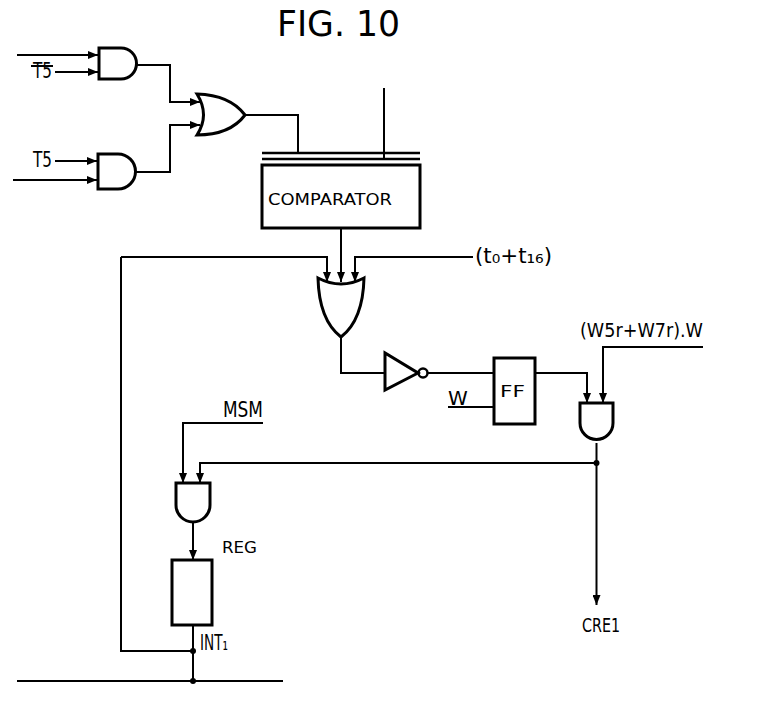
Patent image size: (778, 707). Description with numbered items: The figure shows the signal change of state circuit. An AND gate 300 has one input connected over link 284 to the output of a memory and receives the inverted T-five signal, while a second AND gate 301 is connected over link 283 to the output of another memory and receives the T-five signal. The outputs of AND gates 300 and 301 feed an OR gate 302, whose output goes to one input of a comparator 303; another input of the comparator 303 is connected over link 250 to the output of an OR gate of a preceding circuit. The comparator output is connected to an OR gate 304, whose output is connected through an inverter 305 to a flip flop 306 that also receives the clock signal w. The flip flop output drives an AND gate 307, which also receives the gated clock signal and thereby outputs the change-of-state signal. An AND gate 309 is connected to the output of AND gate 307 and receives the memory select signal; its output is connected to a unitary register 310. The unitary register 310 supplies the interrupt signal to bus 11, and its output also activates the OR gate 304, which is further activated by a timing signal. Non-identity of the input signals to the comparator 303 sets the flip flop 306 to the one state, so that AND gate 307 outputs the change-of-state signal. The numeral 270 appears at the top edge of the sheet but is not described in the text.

The link 284 is at (45, 54).
The link 283 is at (44, 183).
The AND gate 300 is at (117, 70).
The AND gate 301 is at (117, 177).
The OR gate 302 is at (222, 108).
The link 250 is at (386, 115).
The comparator 303 is at (403, 196).
The OR gate 304 is at (327, 303).
The inverter 305 is at (398, 368).
The flip flop 306 is at (513, 373).
The AND gate 307 is at (600, 422).
The AND gate 309 is at (198, 505).
The unitary register 310 is at (200, 595).
The bus 11 is at (247, 680).
The line 270 is at (523, 0).